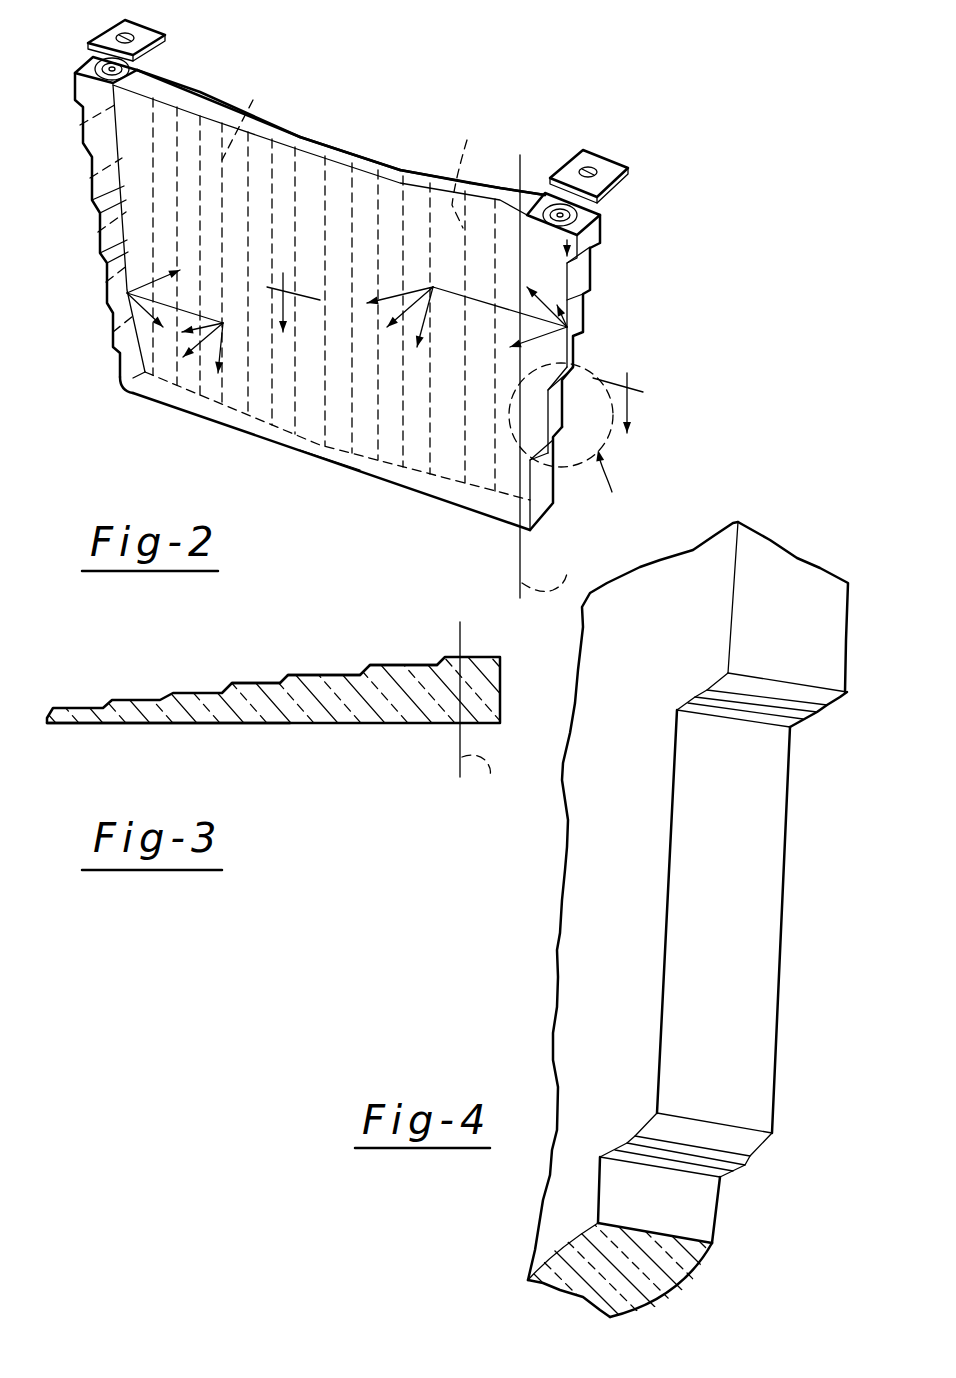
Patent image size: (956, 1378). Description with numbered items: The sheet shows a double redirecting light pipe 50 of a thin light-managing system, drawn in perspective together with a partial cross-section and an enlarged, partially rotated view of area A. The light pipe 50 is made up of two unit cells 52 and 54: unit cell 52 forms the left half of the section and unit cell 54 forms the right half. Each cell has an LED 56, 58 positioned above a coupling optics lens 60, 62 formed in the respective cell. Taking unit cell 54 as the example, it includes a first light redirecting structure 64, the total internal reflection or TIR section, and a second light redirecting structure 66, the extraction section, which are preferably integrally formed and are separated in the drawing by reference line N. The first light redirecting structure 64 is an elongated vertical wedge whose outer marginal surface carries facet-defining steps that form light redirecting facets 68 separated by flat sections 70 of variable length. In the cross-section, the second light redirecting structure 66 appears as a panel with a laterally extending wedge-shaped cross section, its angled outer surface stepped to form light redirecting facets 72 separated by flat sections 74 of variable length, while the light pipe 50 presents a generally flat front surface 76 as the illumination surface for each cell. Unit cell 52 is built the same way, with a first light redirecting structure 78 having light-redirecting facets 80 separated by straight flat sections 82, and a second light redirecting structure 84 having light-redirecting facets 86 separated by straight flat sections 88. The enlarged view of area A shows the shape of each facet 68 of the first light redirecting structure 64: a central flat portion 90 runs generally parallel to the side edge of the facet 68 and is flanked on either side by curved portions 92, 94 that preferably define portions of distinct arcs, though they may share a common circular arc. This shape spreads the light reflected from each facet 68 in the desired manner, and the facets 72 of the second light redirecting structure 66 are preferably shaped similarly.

In FIG. 2, the double redirecting light pipe 50 is at (470, 112).
In FIG. 2, the unit cell 52 is at (177, 411).
In FIG. 2, the unit cell 54 is at (485, 522).
In FIG. 2, the LED 56 is at (147, 27).
In FIG. 2, the LED 58 is at (605, 155).
In FIG. 2, the coupling optics lens 60 is at (94, 64).
In FIG. 2, the coupling optics lens 62 is at (600, 212).
In FIG. 2, the first light redirecting structure 64 is at (603, 270).
In FIG. 4, the first light redirecting structure 64 is at (775, 540).
In FIG. 2, the second light redirecting structure 66 is at (508, 176).
In FIG. 3, the second light redirecting structure 66 is at (352, 722).
In FIG. 2, the light redirecting facets 68 is at (570, 370).
In FIG. 4, the light redirecting facets 68 is at (847, 700).
In FIG. 2, the flat sections 70 is at (557, 419).
In FIG. 4, the flat sections 70 is at (765, 913).
In FIG. 2, the light redirecting facets 72 is at (473, 177).
In FIG. 3, the light redirecting facets 72 is at (283, 672).
In FIG. 2, the flat sections 74 is at (423, 172).
In FIG. 3, the flat sections 74 is at (310, 672).
In FIG. 2, the front surface 76 is at (420, 425).
In FIG. 3, the front surface 76 is at (282, 723).
In FIG. 2, the first light redirecting structure 78 is at (81, 180).
In FIG. 2, the light-redirecting facets 80 is at (105, 262).
In FIG. 2, the straight flat sections 82 is at (100, 235).
In FIG. 2, the second light redirecting structure 84 is at (210, 88).
In FIG. 2, the light-redirecting facets 86 is at (257, 104).
In FIG. 2, the straight flat sections 88 is at (295, 127).
In FIG. 4, the central flat portion 90 is at (817, 707).
In FIG. 4, the curved portion 92 is at (773, 690).
In FIG. 4, the curved portion 94 is at (768, 717).